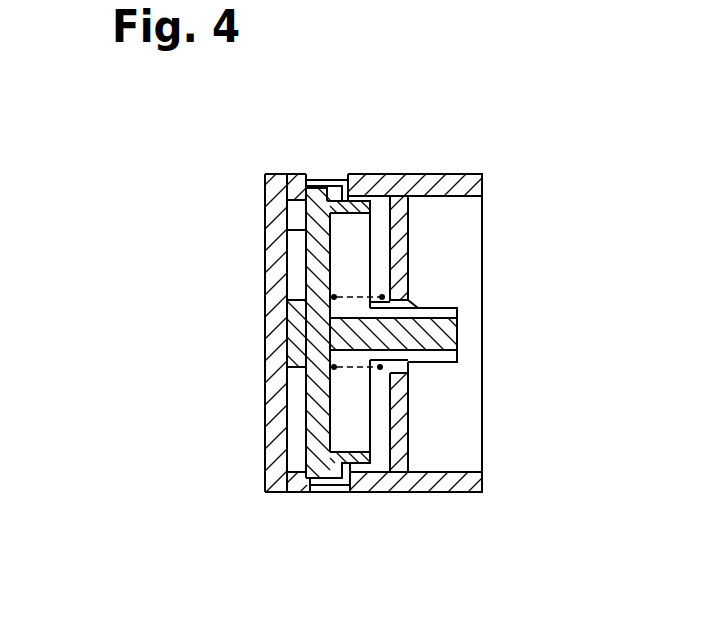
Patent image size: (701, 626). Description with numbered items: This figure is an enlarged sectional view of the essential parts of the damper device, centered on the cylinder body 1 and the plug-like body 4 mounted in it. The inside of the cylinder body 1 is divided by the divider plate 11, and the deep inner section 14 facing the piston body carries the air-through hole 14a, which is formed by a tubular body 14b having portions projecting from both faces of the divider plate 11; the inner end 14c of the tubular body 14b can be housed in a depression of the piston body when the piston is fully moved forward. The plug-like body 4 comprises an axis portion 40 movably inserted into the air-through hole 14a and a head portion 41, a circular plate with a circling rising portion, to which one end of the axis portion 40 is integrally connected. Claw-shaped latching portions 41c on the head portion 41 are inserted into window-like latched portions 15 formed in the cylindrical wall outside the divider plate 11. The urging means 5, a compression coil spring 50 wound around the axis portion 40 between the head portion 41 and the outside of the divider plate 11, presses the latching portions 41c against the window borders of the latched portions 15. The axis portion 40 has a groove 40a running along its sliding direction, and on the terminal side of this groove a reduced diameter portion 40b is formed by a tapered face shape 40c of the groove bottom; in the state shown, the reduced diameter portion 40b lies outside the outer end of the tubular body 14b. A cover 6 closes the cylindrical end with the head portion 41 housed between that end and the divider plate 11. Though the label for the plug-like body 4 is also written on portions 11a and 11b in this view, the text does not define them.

The cylinder body 1 is at (452, 173).
The plug-like body 4 is at (300, 268).
The urging means 5 is at (383, 365).
The compression coil spring 50 is at (388, 493).
The cover 6 is at (265, 200).
The divider plate 11 is at (408, 447).
The cylindrical portion of bearing holder 11a is at (408, 223).
The flange portion of bearing holder 11b is at (386, 235).
The deep inner section 14 is at (408, 407).
The air-through hole 14a is at (446, 362).
The tubular body 14b is at (458, 308).
The inner end 14c is at (442, 302).
The latched portion 15 is at (348, 558).
The axis portion 40 is at (458, 333).
The groove 40a is at (432, 306).
The reduced diameter portion 40b is at (300, 315).
The tapered face shape 40c is at (300, 315).
The head portion 41 is at (290, 404).
The latching portion 41c is at (308, 527).